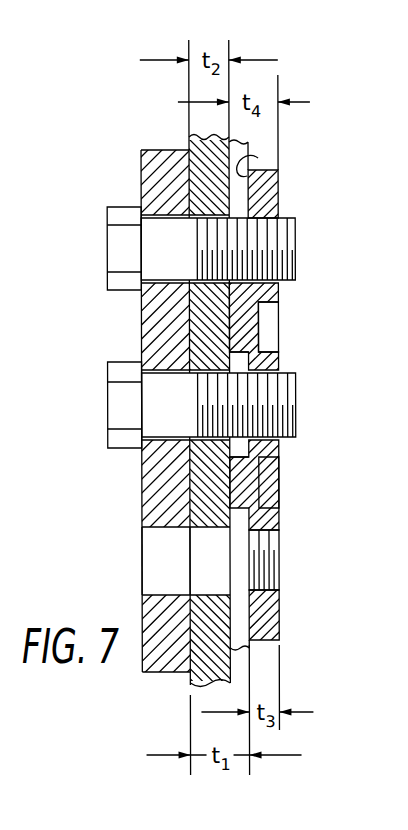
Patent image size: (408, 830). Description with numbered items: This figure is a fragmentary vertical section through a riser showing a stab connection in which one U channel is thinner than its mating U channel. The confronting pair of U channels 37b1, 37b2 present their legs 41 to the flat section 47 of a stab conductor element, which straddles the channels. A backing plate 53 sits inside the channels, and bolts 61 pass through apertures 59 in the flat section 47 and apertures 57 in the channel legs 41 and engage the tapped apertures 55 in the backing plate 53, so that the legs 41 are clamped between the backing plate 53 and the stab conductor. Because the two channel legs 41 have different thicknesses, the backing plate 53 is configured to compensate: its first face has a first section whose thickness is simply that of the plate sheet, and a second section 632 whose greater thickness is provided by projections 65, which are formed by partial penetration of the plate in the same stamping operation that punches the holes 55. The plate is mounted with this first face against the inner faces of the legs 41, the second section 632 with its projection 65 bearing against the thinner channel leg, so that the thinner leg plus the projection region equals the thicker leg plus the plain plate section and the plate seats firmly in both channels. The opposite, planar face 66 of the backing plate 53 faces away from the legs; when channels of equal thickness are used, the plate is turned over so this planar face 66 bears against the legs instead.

The legs 41 is at (192, 685).
The flat section 47 is at (154, 152).
The backing plate 53 is at (204, 415).
The tapped apertures 55 is at (268, 582).
The apertures 57 is at (210, 594).
The apertures 59 is at (156, 528).
The bolts 61 is at (112, 247).
The second section 632 is at (258, 158).
The projections 65 is at (236, 303).
The second planar face 66 is at (280, 203).
The thin plate upper portion 37b1 is at (247, 143).
The thin plate lower portion 37b2 is at (230, 658).